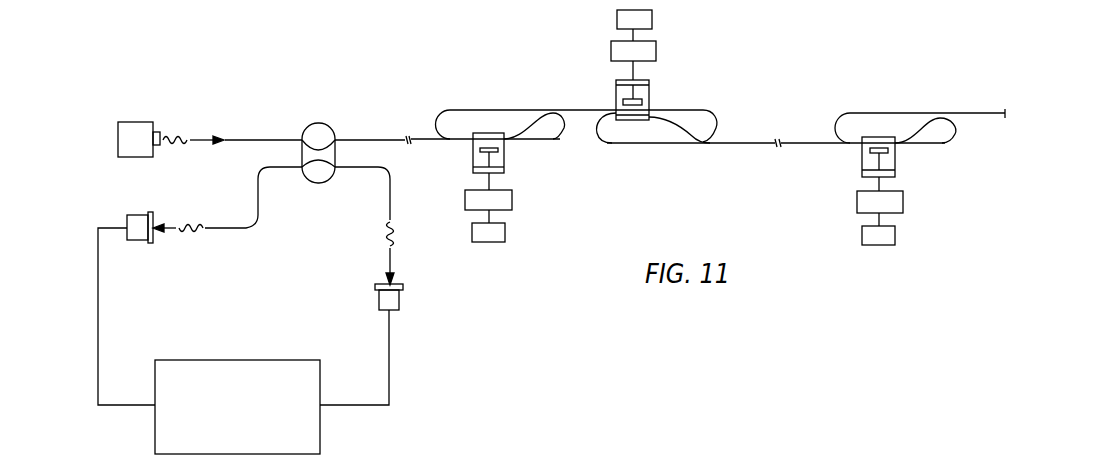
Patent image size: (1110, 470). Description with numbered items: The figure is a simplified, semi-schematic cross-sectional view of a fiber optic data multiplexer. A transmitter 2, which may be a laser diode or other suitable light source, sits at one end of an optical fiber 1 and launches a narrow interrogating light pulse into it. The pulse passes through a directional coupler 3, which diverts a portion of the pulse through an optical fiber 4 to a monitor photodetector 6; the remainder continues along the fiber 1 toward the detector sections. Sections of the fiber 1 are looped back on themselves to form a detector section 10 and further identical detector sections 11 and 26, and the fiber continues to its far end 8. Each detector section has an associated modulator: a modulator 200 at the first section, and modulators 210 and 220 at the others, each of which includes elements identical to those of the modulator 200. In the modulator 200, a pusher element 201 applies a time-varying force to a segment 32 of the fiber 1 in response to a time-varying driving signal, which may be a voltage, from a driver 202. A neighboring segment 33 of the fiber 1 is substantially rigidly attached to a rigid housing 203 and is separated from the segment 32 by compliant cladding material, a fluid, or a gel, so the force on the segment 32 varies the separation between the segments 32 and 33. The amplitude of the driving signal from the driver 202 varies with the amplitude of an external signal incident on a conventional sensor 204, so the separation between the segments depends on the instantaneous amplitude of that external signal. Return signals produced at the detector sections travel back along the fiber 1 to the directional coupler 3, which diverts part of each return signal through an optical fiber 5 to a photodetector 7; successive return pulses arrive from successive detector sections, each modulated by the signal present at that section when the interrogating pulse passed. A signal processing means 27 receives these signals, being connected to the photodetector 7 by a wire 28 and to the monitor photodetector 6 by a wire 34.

The optical fiber 1 is at (383, 139).
The transmitter 2 is at (131, 122).
The directional coupler 3 is at (317, 123).
The optical fiber 4 is at (387, 202).
The optical fiber 5 is at (259, 217).
The monitor photodetector 6 is at (403, 303).
The photodetector 7 is at (143, 241).
The fiber end 8 is at (988, 113).
The detector section 10 is at (564, 131).
The detector section 11 is at (696, 110).
The detector section 26 is at (950, 140).
The signal processing means 27 is at (255, 360).
The wire 28 is at (127, 407).
The segment 32 is at (438, 146).
The segment 33 is at (457, 135).
The wire 34 is at (389, 396).
The modulator 200 is at (508, 167).
The pusher element 201 is at (500, 151).
The driver 202 is at (513, 208).
The rigid housing 203 is at (488, 133).
The conventional sensor 204 is at (480, 243).
The modulator 210 is at (604, 87).
The modulator 220 is at (852, 176).